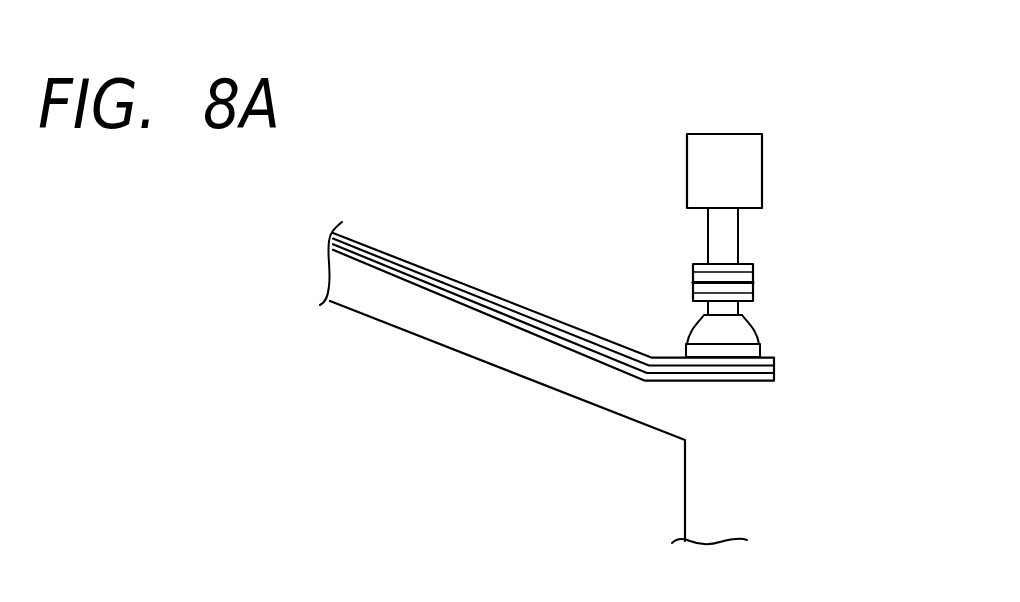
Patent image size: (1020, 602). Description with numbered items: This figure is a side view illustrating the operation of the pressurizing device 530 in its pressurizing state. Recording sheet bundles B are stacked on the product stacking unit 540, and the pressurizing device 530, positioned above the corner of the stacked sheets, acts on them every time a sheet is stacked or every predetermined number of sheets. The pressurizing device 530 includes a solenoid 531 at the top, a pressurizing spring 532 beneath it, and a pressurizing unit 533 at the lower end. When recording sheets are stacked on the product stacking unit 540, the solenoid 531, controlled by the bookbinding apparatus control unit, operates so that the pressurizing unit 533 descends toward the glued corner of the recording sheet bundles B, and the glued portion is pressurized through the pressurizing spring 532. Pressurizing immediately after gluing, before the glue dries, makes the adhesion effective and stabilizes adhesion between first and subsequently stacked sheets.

The recording sheet bundle B is at (435, 267).
The pressurizing device 530 is at (724, 116).
The solenoid 531 is at (687, 161).
The pressurizing spring 532 is at (692, 284).
The pressurizing unit 533 is at (753, 330).
The product stacking unit 540 is at (587, 403).